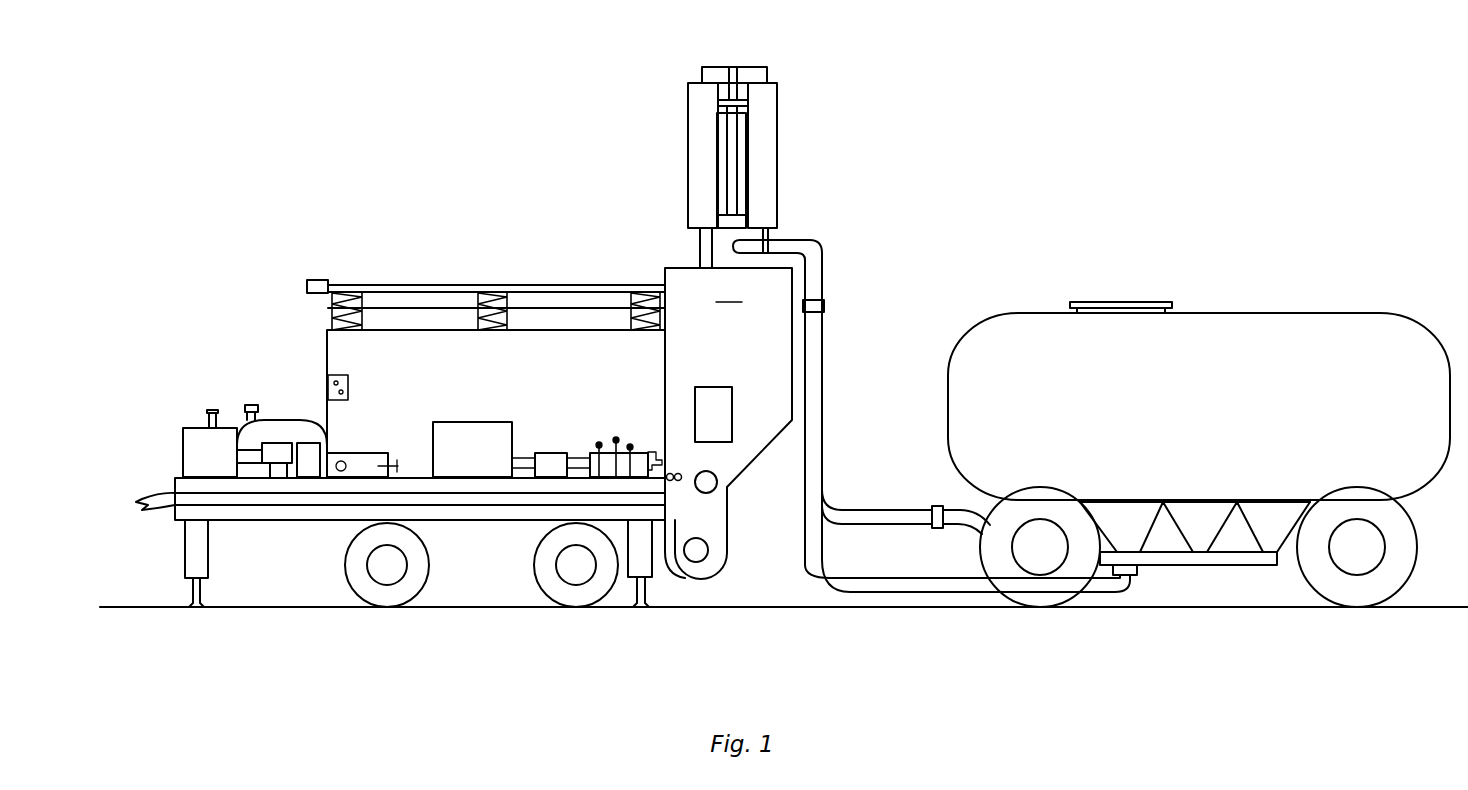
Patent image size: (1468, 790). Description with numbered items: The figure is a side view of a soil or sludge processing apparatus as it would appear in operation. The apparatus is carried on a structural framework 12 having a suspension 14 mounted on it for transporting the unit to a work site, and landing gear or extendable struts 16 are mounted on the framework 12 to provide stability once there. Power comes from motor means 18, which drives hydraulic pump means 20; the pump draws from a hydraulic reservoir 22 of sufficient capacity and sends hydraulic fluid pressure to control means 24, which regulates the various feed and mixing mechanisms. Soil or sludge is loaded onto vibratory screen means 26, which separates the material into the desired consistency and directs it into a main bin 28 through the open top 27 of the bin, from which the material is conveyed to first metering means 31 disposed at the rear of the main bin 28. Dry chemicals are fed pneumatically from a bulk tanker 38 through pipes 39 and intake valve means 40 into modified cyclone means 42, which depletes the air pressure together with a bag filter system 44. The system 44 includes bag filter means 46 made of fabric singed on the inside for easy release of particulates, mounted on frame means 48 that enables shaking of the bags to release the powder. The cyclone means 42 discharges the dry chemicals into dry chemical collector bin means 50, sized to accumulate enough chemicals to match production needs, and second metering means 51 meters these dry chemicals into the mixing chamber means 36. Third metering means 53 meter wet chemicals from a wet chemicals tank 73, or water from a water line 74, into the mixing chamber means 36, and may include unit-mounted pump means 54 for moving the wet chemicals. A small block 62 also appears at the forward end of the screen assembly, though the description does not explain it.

The structural framework 12 is at (320, 526).
The suspension 14 is at (513, 565).
The landing gear or extendable struts 16 is at (195, 609).
The motor means 18 is at (271, 414).
The hydraulic pump means 20 is at (273, 443).
The hydraulic reservoir 22 is at (212, 410).
The control means 24 is at (630, 440).
The vibratory screen means 26 is at (502, 278).
The open top 27 is at (404, 324).
The main bin 28 is at (318, 342).
The first metering means 31 is at (670, 414).
The mixing chamber means 36 is at (718, 572).
The bulk tanker 38 is at (1043, 330).
The pipes 39 is at (917, 515).
The intake valve means 40 is at (822, 300).
The modified cyclone means 42 is at (712, 258).
The bag filter system 44 is at (806, 110).
The bag filter means 46 is at (760, 165).
The frame means 48 is at (735, 55).
The dry chemical collector bin means 50 is at (728, 423).
The second metering means 51 is at (724, 482).
The third metering means 53 is at (670, 495).
The unit-mounted pump means 54 is at (563, 453).
The stop block 62 is at (315, 280).
The wet chemicals tank 73 is at (463, 422).
The water line 74 is at (265, 500).